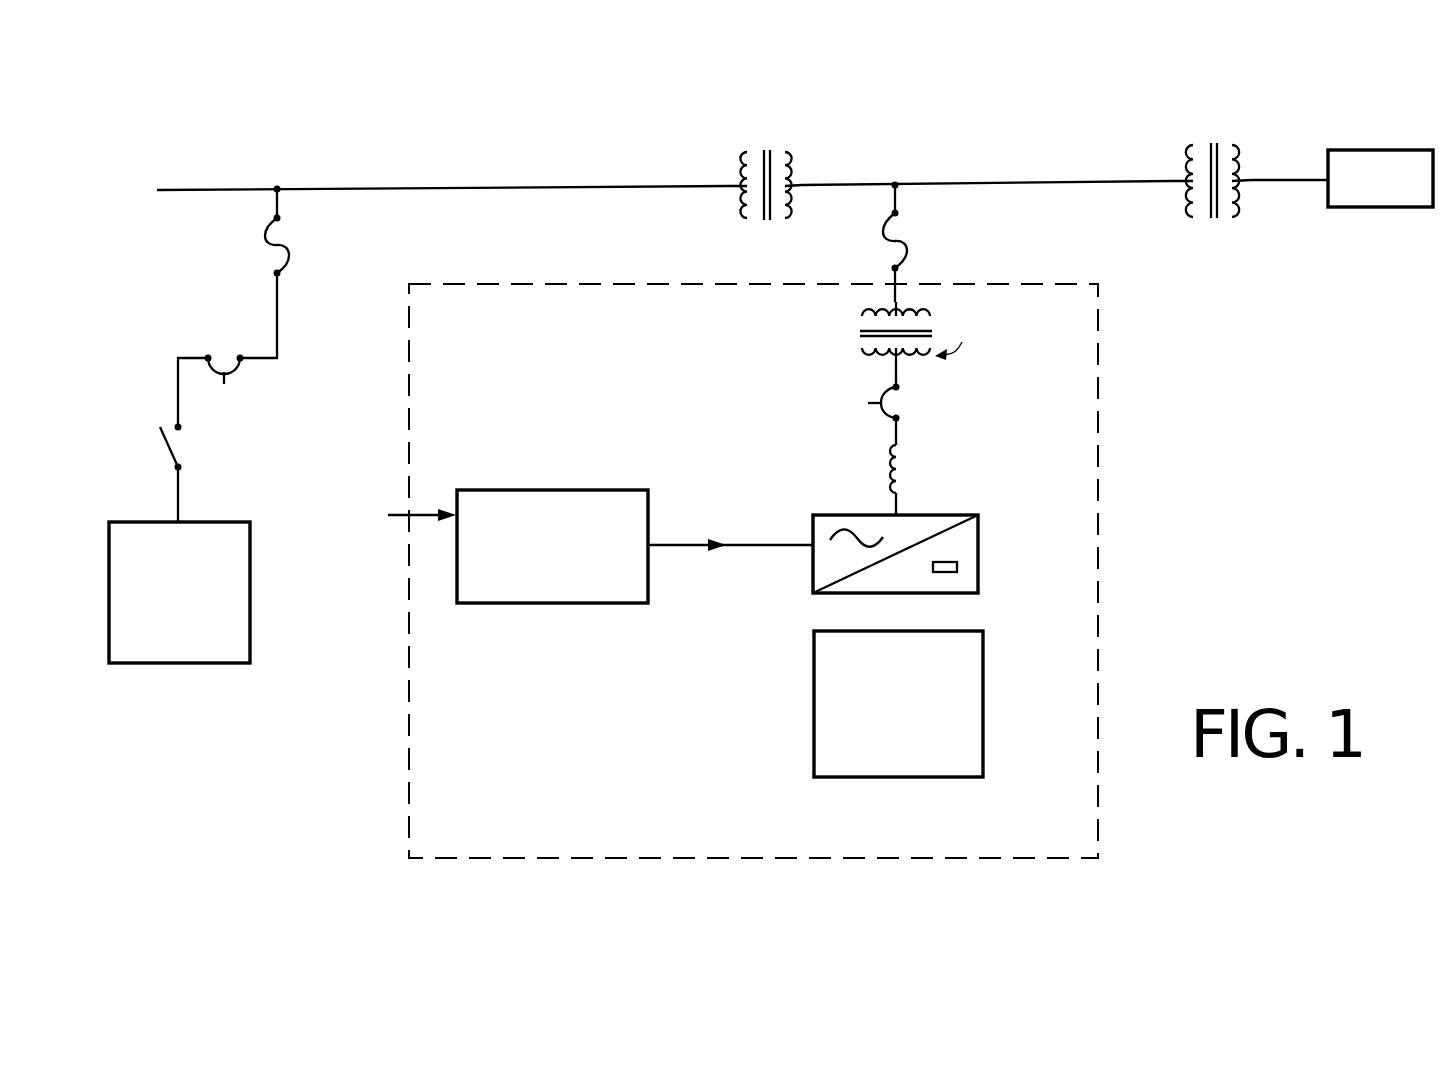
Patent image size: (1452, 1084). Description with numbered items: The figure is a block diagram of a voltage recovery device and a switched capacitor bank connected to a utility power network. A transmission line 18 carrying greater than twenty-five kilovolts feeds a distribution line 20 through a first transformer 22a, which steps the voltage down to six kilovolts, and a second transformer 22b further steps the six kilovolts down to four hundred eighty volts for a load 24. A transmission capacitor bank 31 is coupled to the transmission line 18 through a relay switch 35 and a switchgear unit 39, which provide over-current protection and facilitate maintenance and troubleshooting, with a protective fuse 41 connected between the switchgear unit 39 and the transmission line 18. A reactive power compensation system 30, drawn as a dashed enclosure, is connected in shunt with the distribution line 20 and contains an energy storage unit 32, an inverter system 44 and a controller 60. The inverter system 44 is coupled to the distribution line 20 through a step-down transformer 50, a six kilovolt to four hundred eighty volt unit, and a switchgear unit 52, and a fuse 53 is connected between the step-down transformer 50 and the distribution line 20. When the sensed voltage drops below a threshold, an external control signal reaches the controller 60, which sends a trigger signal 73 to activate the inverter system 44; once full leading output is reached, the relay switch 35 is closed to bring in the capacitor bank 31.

The transmission line 18 is at (195, 189).
The distribution line 20 is at (1080, 182).
The first transformer 22a is at (730, 172).
The second transformer 22b is at (1220, 218).
The load 24 is at (1380, 150).
The protective fuse 41 is at (282, 242).
The switchgear unit 39 is at (226, 356).
The relay switch 35 is at (172, 444).
The transmission capacitor bank 31 is at (172, 664).
The fuse 53 is at (900, 236).
The reactive power compensation system 30 is at (512, 810).
The step-down transformer 50 is at (860, 322).
The switchgear unit 52 is at (904, 401).
The inverter system 44 is at (978, 550).
The controller 60 is at (530, 604).
The trigger signal 73 is at (718, 548).
The energy storage unit 32 is at (984, 668).